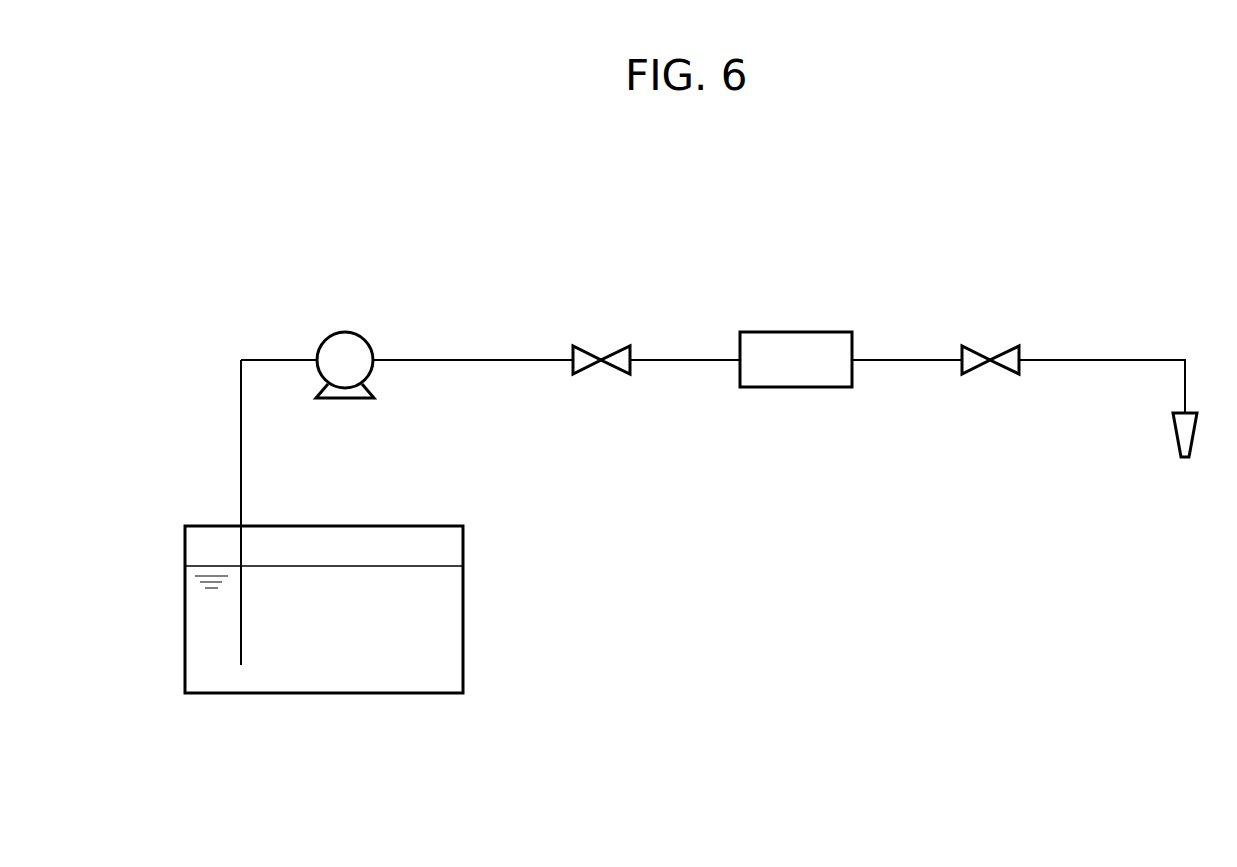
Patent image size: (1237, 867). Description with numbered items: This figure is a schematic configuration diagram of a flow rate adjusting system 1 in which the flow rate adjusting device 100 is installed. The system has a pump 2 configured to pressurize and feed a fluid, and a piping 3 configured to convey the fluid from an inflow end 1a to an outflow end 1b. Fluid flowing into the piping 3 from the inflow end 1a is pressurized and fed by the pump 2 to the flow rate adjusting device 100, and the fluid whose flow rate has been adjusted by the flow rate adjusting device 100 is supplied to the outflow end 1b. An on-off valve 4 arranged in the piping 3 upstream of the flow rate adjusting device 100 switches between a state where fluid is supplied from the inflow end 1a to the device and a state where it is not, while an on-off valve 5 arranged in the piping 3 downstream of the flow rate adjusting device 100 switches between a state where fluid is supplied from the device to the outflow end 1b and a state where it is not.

The flow rate adjusting system 1 is at (1160, 170).
The inflow end 1a is at (249, 692).
The outflow end 1b is at (1193, 484).
The pump 2 is at (345, 331).
The piping 3 is at (465, 358).
The on-off valve 4 is at (615, 345).
The on-off valve 5 is at (1003, 346).
The flow rate adjusting device 100 is at (796, 332).